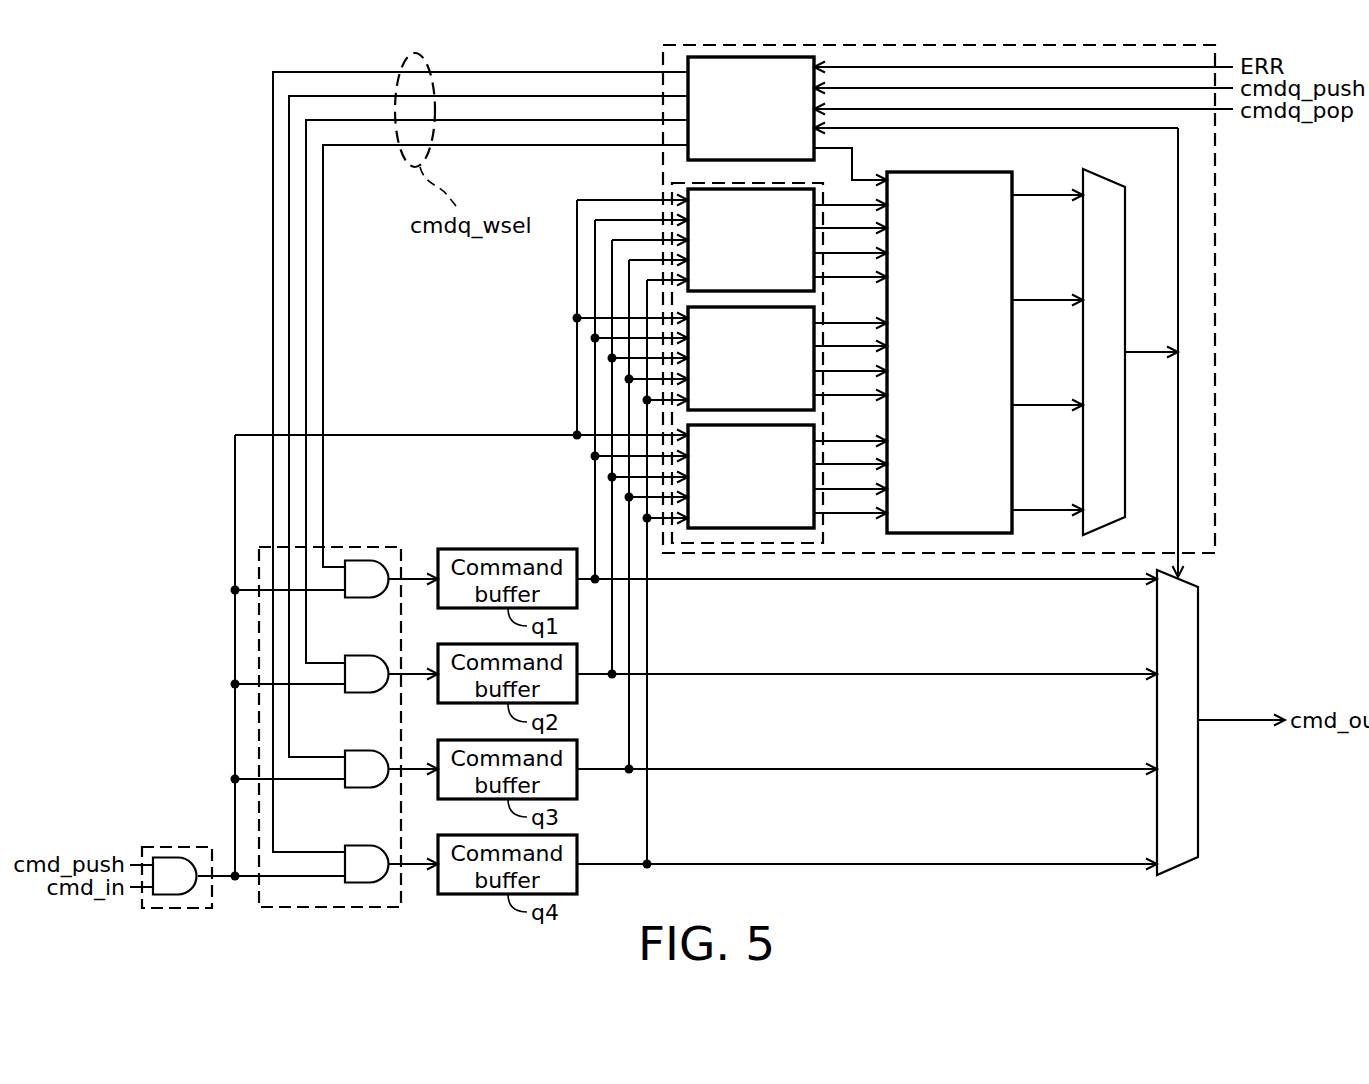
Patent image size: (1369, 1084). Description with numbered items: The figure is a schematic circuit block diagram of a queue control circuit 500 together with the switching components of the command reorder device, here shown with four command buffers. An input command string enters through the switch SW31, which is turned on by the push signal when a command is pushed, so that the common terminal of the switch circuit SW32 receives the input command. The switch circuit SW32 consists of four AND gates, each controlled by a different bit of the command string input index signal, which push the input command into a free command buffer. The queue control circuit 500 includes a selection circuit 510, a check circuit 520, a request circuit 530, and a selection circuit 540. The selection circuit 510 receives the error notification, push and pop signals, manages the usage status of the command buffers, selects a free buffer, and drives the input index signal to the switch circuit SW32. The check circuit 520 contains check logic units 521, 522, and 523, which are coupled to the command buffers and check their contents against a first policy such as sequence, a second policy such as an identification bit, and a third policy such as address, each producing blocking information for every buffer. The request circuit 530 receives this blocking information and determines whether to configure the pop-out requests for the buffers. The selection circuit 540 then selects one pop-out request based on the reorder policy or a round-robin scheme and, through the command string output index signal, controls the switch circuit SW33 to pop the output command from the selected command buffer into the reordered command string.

The queue control circuit 500 is at (1215, 272).
The selection circuit 510 is at (688, 63).
The check circuit 520 is at (690, 184).
The check logic unit 521 is at (814, 288).
The check logic unit 522 is at (814, 407).
The check logic unit 523 is at (814, 523).
The request circuit 530 is at (948, 535).
The selection circuit 540 is at (1105, 537).
The switch SW31 is at (183, 846).
The switch circuit SW32 is at (355, 546).
The switch circuit SW33 is at (1200, 616).